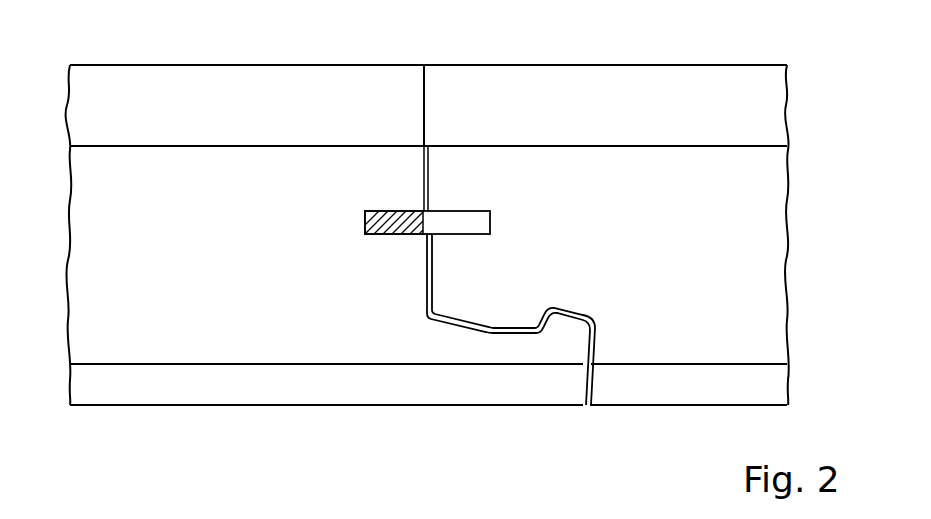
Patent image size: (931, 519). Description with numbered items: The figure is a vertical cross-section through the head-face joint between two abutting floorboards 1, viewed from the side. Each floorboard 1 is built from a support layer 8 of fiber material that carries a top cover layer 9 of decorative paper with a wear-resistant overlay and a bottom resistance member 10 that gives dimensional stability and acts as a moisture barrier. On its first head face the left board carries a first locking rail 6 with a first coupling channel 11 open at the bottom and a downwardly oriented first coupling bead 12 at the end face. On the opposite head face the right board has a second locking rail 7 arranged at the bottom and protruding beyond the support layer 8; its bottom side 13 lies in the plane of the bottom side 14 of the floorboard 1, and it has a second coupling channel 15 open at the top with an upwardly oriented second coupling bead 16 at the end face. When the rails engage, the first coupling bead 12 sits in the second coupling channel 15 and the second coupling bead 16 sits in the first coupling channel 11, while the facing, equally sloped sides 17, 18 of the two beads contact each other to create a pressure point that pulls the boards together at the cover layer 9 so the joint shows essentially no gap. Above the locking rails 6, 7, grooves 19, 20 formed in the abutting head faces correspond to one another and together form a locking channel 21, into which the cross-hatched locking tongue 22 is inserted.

The floorboard 1 is at (194, 61).
The first locking rail 6 is at (477, 305).
The second locking rail 7 is at (524, 350).
The support layer 8 is at (131, 251).
The cover layer 9 is at (748, 86).
The resistance member 10 is at (152, 390).
The first coupling channel 11 is at (576, 316).
The first coupling bead 12 is at (493, 319).
The bottom side of the second locking rail 13 is at (497, 406).
The bottom side of the floorboard 14 is at (226, 405).
The second coupling channel 15 is at (447, 329).
The second coupling bead 16 is at (578, 342).
The side of the first coupling bead 17 is at (545, 316).
The side of the second coupling bead 18 is at (547, 324).
The groove 19 is at (485, 214).
The groove 20 is at (366, 233).
The locking channel 21 is at (436, 210).
The locking tongue 22 is at (389, 224).